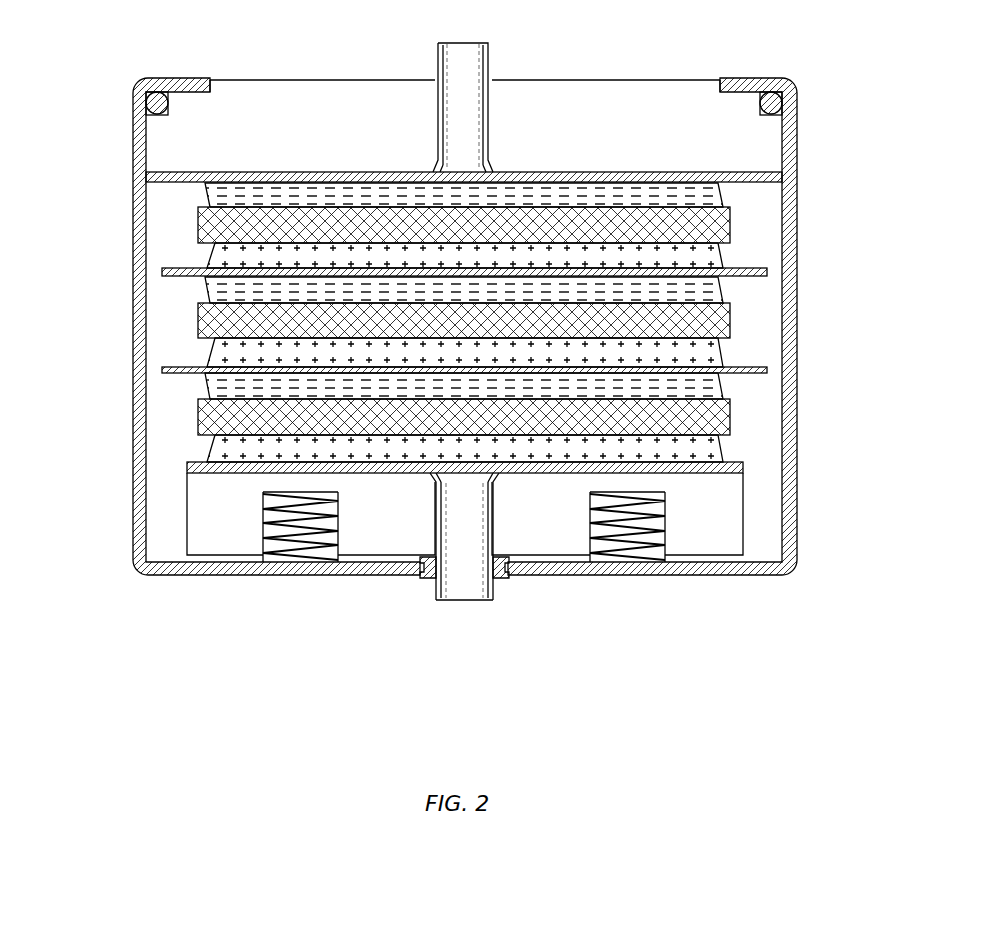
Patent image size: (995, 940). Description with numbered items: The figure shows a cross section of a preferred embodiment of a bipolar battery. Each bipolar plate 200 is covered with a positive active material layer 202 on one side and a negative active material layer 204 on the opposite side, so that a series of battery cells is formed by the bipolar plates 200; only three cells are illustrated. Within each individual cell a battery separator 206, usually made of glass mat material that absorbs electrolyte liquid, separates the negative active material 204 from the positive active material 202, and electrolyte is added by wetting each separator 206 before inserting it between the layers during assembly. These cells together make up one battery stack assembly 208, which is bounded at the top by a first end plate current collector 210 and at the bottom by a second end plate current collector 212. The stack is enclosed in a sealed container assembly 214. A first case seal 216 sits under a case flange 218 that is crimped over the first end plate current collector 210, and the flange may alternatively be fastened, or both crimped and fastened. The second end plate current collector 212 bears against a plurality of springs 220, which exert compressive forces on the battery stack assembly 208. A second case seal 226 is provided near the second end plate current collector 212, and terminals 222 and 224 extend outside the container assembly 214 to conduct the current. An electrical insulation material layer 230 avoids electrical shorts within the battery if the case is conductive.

The bipolar plate 200 is at (165, 272).
The positive active material layer 202 is at (220, 352).
The negative active material layer 204 is at (220, 290).
The battery separator 206 is at (200, 315).
The battery stack assembly 208 is at (480, 322).
The first end plate current collector 210 is at (679, 175).
The second end plate current collector 212 is at (713, 472).
The sealed container assembly 214 is at (800, 149).
The first case seal 216 is at (157, 103).
The case flange 218 is at (200, 82).
The springs 220 is at (296, 540).
The terminal 222 is at (465, 63).
The terminal 224 is at (454, 580).
The second case seal 226 is at (502, 578).
The electrical insulation material layer 230 is at (782, 527).